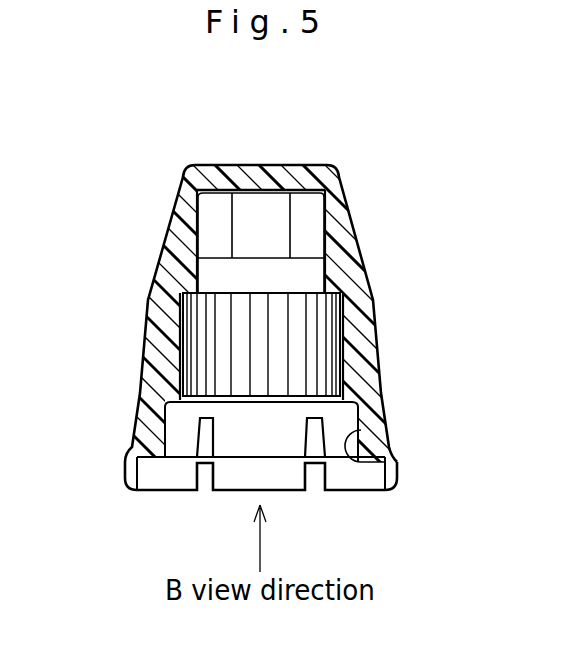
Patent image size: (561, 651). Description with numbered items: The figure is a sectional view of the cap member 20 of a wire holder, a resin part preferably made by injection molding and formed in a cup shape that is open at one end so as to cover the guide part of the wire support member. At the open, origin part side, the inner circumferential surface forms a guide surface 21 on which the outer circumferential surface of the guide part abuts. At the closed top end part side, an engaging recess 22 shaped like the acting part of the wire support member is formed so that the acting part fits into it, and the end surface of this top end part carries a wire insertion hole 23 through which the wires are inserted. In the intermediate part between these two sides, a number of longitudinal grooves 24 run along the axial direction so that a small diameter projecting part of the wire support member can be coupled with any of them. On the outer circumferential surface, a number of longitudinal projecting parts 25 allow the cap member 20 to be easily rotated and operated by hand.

The cap member 20 is at (381, 197).
The guide surface 21 is at (381, 467).
The engaging recess 22 is at (305, 222).
The wire insertion hole 23 is at (257, 173).
The longitudinal grooves 24 is at (300, 343).
The longitudinal projecting parts 25 is at (147, 347).